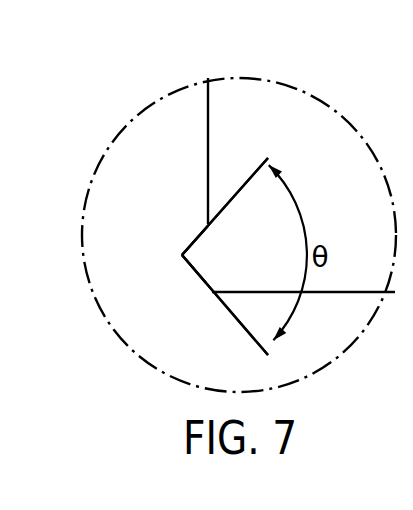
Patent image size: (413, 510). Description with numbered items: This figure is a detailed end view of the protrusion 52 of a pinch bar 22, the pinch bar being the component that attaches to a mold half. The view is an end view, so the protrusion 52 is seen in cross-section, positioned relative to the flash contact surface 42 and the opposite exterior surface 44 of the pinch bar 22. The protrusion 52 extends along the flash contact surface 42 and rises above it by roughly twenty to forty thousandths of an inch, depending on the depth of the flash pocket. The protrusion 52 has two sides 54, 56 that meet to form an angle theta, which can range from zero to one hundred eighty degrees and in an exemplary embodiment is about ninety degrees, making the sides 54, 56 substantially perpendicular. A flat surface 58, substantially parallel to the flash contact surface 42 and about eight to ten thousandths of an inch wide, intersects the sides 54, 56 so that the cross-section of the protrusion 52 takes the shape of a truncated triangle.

The pinch bar 22 is at (145, 80).
The flash contact surface 42 is at (207, 110).
The exterior surface 44 is at (325, 294).
The protrusion 52 is at (215, 256).
The side 54 is at (194, 240).
The side 56 is at (197, 276).
The flat surface 58 is at (181, 256).